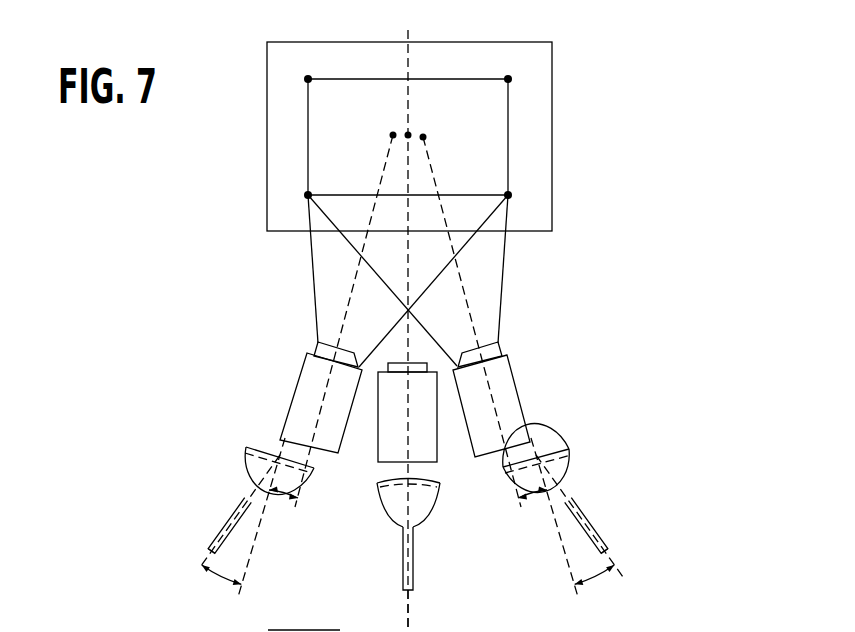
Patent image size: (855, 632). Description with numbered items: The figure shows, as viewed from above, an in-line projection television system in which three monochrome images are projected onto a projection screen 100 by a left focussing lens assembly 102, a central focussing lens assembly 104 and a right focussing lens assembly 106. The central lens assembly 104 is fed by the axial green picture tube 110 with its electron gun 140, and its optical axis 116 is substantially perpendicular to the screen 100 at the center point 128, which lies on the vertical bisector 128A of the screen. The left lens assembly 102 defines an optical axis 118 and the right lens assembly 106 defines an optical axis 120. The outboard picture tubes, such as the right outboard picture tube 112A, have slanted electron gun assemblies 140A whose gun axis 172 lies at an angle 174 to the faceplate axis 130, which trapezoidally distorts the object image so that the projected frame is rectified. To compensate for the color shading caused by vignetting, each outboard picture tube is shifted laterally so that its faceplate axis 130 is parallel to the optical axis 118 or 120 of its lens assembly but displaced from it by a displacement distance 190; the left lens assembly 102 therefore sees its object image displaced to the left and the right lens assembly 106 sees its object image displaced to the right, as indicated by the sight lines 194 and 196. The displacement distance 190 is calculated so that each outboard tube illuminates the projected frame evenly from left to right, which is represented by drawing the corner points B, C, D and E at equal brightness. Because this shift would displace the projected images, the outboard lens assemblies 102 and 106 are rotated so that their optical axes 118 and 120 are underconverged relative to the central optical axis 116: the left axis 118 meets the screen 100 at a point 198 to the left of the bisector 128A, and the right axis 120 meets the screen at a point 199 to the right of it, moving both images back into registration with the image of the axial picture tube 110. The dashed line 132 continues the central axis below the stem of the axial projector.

The projection screen 100 is at (553, 105).
The vertical bisector 128A is at (426, 34).
The center point of projection screen 128 is at (409, 132).
The intersection point of left optical axis 198 is at (392, 133).
The intersection point of right optical axis 199 is at (424, 136).
The left upper corner of projected image frame C is at (306, 76).
The right upper corner of projected image frame E is at (509, 78).
The left lower corner of projected image frame D is at (307, 194).
The right lower corner of projected image frame B is at (509, 195).
The optical axis of left lens assembly 118 is at (357, 272).
The optical axis of right lens assembly 120 is at (463, 290).
The optical axis of central lens assembly 116 is at (414, 327).
The left focussing lens assembly 102 is at (300, 368).
The right focussing lens assembly 106 is at (522, 402).
The central focussing lens assembly 104 is at (437, 456).
The green monochrome picture tube 110 is at (390, 520).
The electron gun 140 is at (401, 563).
The central axis below stem 132 is at (409, 596).
The left sight line 194 is at (266, 444).
The right sight line 196 is at (553, 448).
The right outboard picture tube 112A is at (580, 483).
The electron gun axis 172 is at (218, 530).
The slanted electron gun assembly 140A is at (210, 538).
The faceplate axis 130 is at (250, 560).
The displacement distance 190 is at (278, 497).
The angle between gun axis and faceplate axis 174 is at (210, 580).